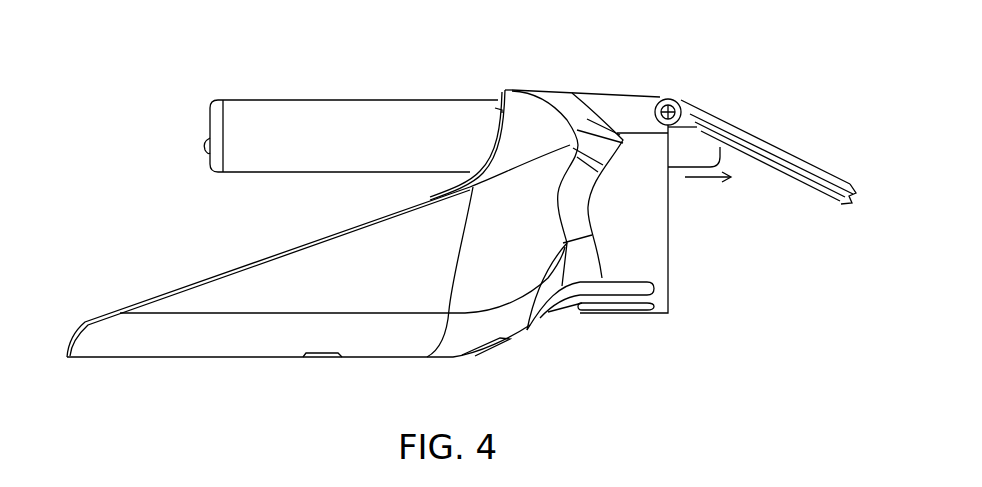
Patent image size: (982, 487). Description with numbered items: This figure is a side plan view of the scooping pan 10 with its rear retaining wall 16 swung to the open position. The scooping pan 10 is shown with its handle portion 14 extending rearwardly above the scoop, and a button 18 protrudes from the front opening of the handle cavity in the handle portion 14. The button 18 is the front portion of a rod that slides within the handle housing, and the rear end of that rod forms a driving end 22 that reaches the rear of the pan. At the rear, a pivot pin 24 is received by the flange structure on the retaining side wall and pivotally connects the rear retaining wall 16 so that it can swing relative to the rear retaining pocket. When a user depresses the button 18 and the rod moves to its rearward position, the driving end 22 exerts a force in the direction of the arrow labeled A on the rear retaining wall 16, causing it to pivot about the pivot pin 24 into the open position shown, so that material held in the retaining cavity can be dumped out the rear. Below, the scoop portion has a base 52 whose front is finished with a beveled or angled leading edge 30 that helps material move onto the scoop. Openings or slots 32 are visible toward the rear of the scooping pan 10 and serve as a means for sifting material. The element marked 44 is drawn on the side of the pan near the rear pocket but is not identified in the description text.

The scooping pan 10 is at (101, 106).
The handle portion 14 is at (348, 98).
The rear retaining wall 16 is at (822, 167).
The button 18 is at (207, 141).
The driving end 22 is at (700, 142).
The pivot pin 24 is at (675, 102).
The leading edge 30 is at (67, 357).
The openings or slots 32 is at (627, 310).
The side wall 44 is at (670, 277).
The base 52 is at (263, 358).